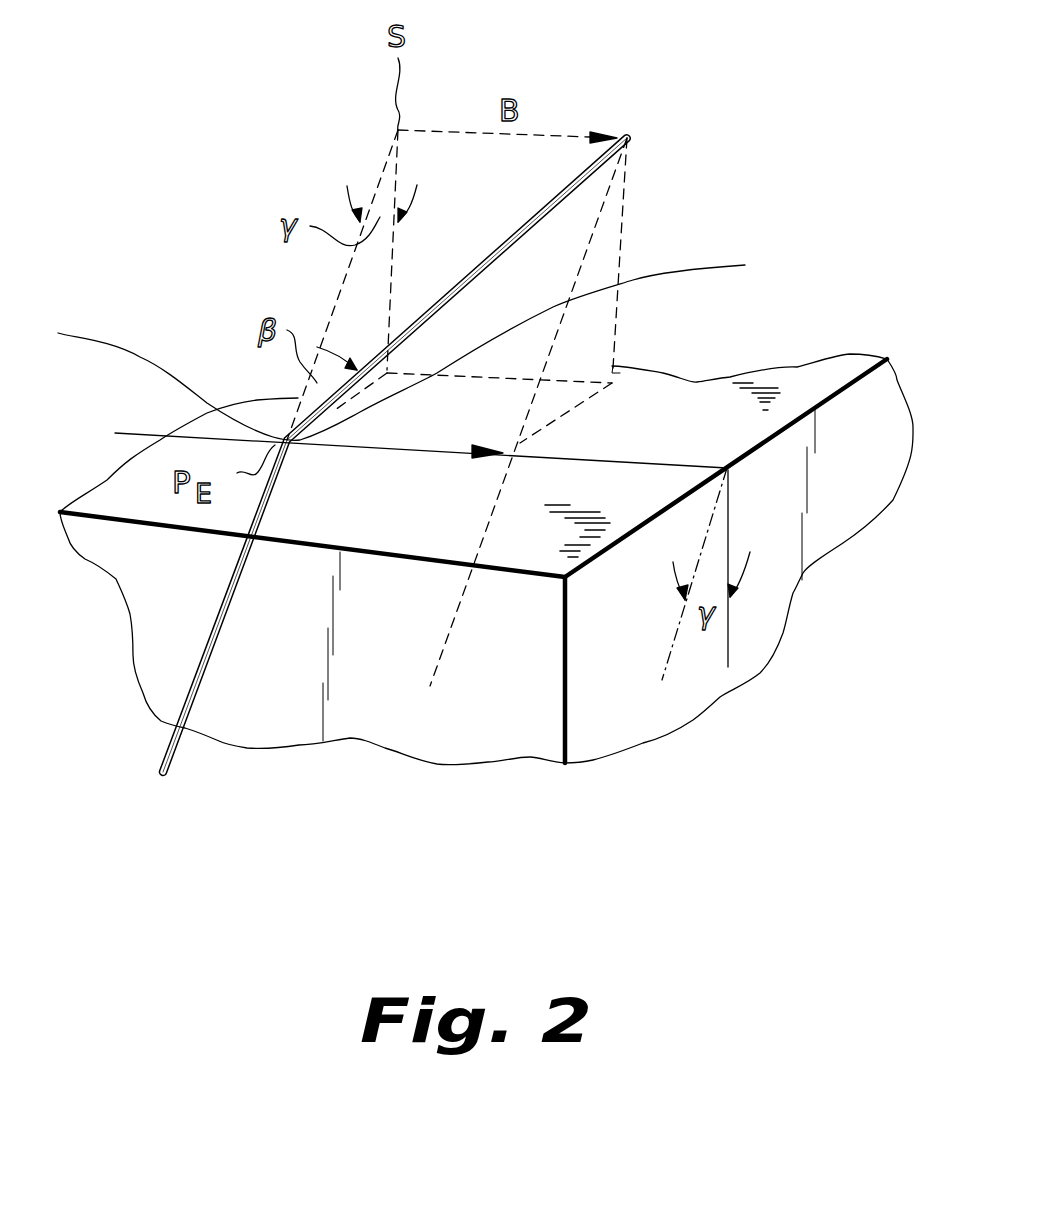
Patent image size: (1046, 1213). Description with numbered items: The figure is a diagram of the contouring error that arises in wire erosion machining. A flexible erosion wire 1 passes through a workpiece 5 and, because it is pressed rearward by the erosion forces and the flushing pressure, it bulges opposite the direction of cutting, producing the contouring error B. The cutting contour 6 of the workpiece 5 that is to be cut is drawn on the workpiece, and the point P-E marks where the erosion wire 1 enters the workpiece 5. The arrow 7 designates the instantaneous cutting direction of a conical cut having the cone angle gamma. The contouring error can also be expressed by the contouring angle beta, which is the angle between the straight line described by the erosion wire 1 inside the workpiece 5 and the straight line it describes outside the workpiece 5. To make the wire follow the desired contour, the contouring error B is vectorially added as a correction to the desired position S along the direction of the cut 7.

The erosion wire 1 is at (533, 217).
The workpiece 5 is at (495, 772).
The cutting contour 6 is at (745, 268).
The arrow designating instantaneous cutting direction 7 is at (430, 458).